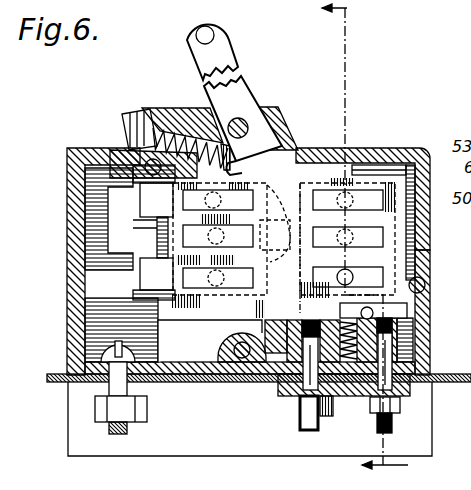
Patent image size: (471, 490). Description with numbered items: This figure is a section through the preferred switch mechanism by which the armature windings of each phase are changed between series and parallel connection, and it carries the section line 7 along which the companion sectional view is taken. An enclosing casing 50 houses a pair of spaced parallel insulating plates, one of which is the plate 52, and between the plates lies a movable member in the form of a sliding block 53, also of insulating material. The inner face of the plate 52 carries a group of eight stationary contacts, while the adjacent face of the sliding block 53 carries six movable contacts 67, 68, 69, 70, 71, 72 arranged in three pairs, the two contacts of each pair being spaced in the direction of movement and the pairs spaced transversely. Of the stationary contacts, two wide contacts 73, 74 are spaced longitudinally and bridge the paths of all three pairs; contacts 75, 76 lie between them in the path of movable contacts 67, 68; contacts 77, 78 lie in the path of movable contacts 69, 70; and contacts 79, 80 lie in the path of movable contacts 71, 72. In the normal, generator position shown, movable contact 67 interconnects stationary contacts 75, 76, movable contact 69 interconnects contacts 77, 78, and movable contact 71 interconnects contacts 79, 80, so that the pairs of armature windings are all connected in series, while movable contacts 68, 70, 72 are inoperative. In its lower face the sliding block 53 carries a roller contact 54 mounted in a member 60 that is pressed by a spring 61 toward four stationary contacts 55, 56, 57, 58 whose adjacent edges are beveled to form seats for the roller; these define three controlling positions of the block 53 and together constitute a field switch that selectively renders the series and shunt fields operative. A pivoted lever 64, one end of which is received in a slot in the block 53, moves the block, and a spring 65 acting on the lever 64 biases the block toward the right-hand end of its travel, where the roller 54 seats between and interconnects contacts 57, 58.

The section line 7— 7 is at (365, 247).
The enclosing casing 50 is at (68, 226).
The plate of insulating material 52 is at (67, 307).
The sliding block 53 is at (83, 332).
The contact 54 is at (373, 306).
The stationary contact 55 is at (270, 323).
The stationary contact 56 is at (304, 318).
The stationary contact 57 is at (352, 297).
The stationary contact 58 is at (420, 326).
The member 60 is at (424, 280).
The spring 61 is at (414, 246).
The pivoted lever 64 is at (248, 91).
The spring 65 is at (165, 114).
The movable contact 67 is at (218, 200).
The movable contact 68 is at (348, 200).
The movable contact 69 is at (218, 236).
The movable contact 70 is at (348, 237).
The movable contact 71 is at (218, 278).
The movable contact 72 is at (348, 277).
The stationary contact 73 is at (115, 212).
The stationary contact 74 is at (422, 211).
The stationary contact 75 is at (156, 200).
The stationary contact 76 is at (296, 151).
The stationary contact 77 is at (150, 237).
The stationary contact 78 is at (299, 283).
The stationary contact 79 is at (156, 274).
The stationary contact 80 is at (210, 331).